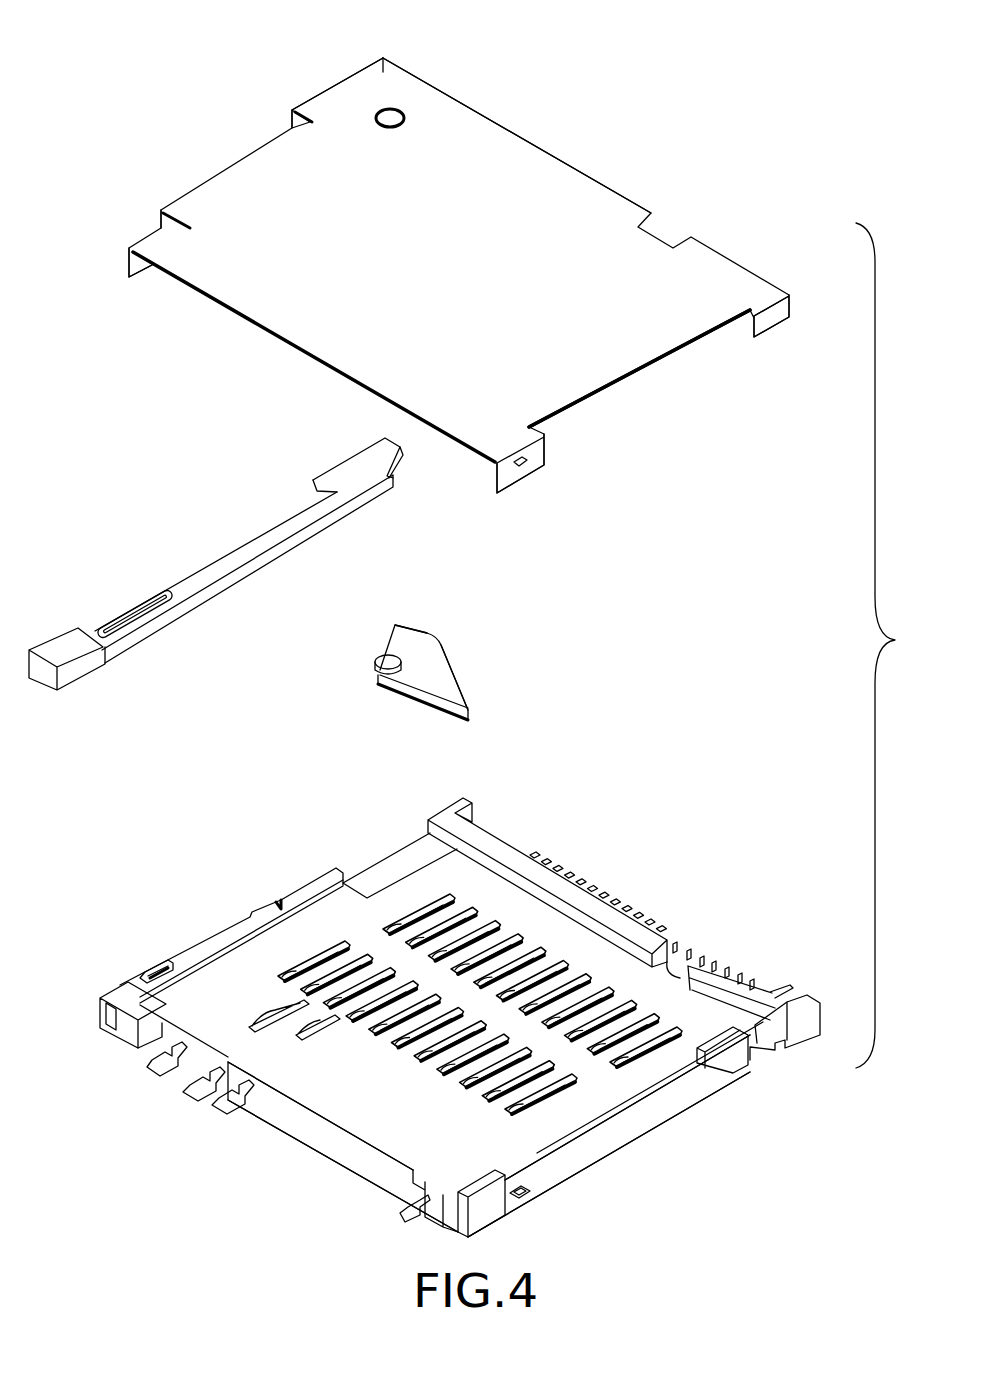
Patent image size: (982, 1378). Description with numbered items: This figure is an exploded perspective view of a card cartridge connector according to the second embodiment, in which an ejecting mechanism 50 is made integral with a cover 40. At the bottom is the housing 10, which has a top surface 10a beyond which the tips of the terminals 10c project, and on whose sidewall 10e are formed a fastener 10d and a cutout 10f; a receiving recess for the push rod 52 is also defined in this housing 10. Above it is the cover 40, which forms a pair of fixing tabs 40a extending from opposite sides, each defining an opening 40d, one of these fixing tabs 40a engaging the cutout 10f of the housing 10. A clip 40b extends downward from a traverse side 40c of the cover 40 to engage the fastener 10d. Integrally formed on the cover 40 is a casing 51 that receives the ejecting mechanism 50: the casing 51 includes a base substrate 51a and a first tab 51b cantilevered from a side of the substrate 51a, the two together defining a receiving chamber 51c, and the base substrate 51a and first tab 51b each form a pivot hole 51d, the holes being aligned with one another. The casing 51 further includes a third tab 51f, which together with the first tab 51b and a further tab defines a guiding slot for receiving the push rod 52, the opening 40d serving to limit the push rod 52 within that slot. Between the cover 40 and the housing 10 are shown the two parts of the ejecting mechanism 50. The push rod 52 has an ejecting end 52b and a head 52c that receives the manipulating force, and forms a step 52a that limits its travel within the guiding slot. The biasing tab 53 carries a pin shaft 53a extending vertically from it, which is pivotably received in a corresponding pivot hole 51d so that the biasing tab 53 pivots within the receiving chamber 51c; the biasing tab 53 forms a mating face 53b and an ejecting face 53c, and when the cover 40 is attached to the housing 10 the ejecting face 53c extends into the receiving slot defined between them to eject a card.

The housing 10 is at (706, 1087).
The top surface 10a is at (352, 1110).
The terminal 10c is at (248, 1090).
The fastener 10d is at (518, 1196).
The sidewall 10e is at (620, 1133).
The cutout 10f is at (770, 1058).
The cover 40 is at (537, 175).
The fixing tab 40a is at (130, 250).
The clip 40b is at (774, 318).
The traverse side 40c is at (673, 350).
The opening 40d is at (523, 465).
The ejecting mechanism 50 is at (78, 545).
The casing 51 is at (410, 68).
The base substrate 51a is at (380, 70).
The first tab 51b is at (289, 127).
The receiving chamber 51c is at (292, 113).
The pivot hole 51d is at (403, 112).
The third tab 51f is at (190, 195).
The push rod 52 is at (265, 552).
The step 52a is at (313, 480).
The ejecting end 52b is at (400, 452).
The head 52c is at (80, 665).
The biasing tab 53 is at (430, 683).
The pin shaft 53a is at (383, 670).
The mating face 53b is at (395, 628).
The ejecting face 53c is at (455, 712).